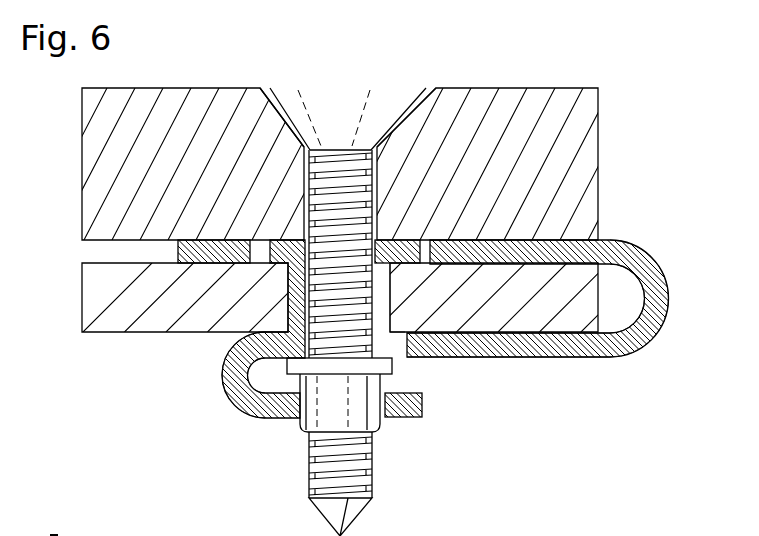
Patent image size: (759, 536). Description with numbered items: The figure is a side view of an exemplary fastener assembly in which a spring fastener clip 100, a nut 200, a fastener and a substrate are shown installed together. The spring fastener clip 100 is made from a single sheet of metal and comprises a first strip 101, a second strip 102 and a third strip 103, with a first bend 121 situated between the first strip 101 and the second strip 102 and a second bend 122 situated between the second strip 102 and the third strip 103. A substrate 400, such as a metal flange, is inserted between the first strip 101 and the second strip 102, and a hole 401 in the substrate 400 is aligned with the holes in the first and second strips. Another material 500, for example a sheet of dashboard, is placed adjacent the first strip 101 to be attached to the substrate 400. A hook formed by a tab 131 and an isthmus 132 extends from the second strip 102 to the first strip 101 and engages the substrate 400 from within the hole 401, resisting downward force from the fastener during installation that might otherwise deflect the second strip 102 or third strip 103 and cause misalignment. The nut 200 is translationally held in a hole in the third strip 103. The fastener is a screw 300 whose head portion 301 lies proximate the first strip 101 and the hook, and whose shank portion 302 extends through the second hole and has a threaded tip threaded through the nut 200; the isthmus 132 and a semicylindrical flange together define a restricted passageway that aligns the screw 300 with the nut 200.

The spring fastener clip 100 is at (379, 298).
The first strip 101 is at (548, 238).
The second strip 102 is at (555, 357).
The third strip 103 is at (423, 405).
The first bend 121 is at (670, 295).
The second bend 122 is at (223, 372).
The tab 131 is at (288, 240).
The isthmus 132 is at (316, 278).
The nut 200 is at (296, 436).
The screw 300 is at (350, 295).
The head portion 301 is at (385, 88).
The shank portion 302 is at (310, 478).
The substrate 400 is at (82, 296).
The hole 401 is at (388, 330).
The another material 500 is at (82, 150).